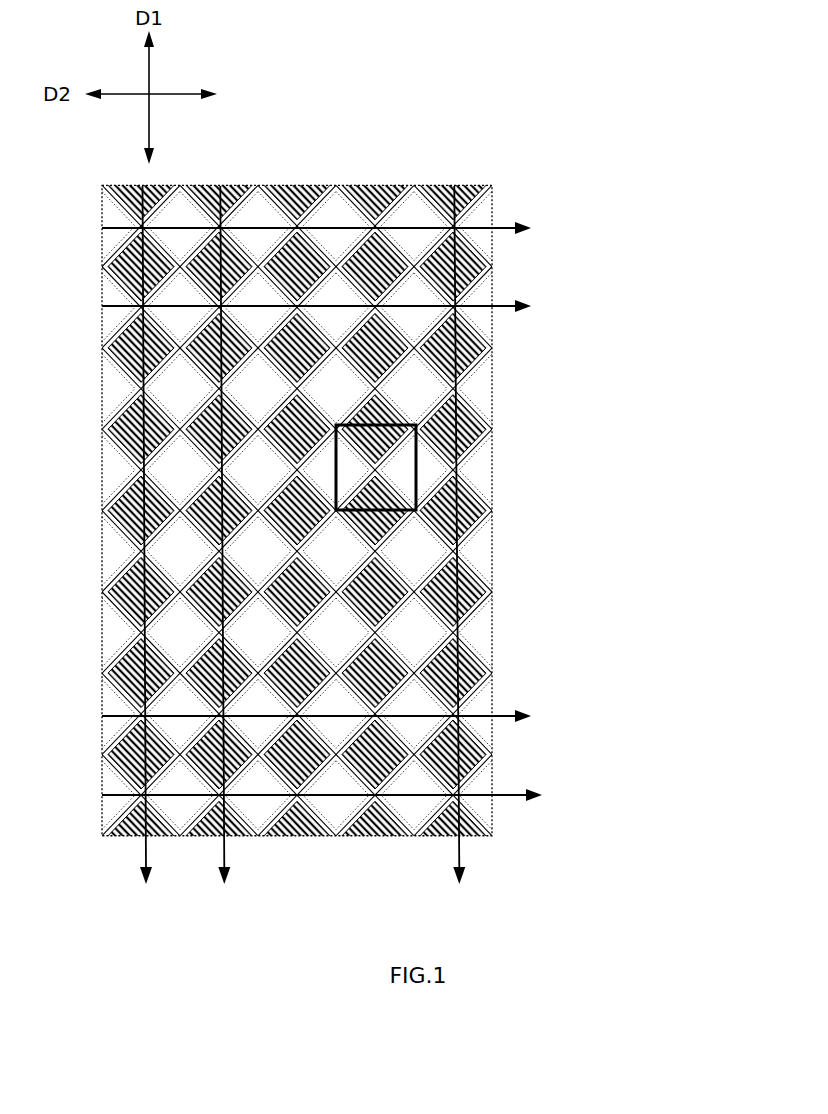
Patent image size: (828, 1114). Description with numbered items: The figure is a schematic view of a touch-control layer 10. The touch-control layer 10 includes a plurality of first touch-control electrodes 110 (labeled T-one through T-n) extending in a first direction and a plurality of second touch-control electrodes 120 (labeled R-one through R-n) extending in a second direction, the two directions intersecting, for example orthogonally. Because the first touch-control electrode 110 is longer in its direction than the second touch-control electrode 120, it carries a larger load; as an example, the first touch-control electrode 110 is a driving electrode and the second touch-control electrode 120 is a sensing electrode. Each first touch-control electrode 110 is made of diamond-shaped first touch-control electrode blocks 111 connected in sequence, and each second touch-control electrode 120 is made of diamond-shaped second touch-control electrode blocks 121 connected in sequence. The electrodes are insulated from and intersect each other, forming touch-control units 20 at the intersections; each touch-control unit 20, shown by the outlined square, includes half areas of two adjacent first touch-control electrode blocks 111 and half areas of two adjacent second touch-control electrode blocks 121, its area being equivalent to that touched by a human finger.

The touch-control layer 10 is at (322, 106).
The touch-control unit 20 is at (417, 419).
The first touch-control electrode block 111 is at (393, 440).
The second touch-control electrode block 121 is at (363, 477).
The first touch-control electrode 110 is at (470, 552).
The second touch-control electrode 120 is at (365, 797).